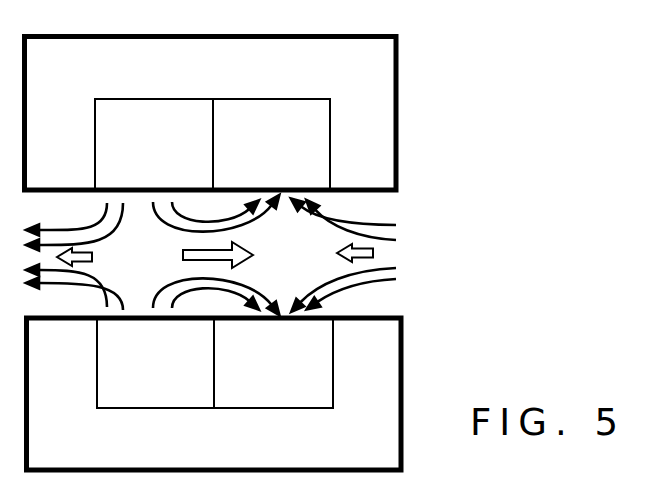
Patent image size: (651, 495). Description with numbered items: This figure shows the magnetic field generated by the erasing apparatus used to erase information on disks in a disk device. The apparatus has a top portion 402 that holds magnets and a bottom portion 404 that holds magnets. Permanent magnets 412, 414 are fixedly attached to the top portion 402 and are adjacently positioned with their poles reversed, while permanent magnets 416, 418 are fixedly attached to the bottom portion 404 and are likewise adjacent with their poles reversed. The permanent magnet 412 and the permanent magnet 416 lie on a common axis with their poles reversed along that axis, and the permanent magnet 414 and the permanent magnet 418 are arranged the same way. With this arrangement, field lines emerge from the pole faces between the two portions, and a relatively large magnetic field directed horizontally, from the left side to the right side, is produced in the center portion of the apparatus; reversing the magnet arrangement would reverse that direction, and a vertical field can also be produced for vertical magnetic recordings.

The top portion 402 is at (237, 78).
The bottom portion 404 is at (240, 458).
The permanent magnet 412 is at (108, 148).
The permanent magnet 414 is at (315, 138).
The permanent magnet 416 is at (115, 371).
The permanent magnet 418 is at (302, 372).